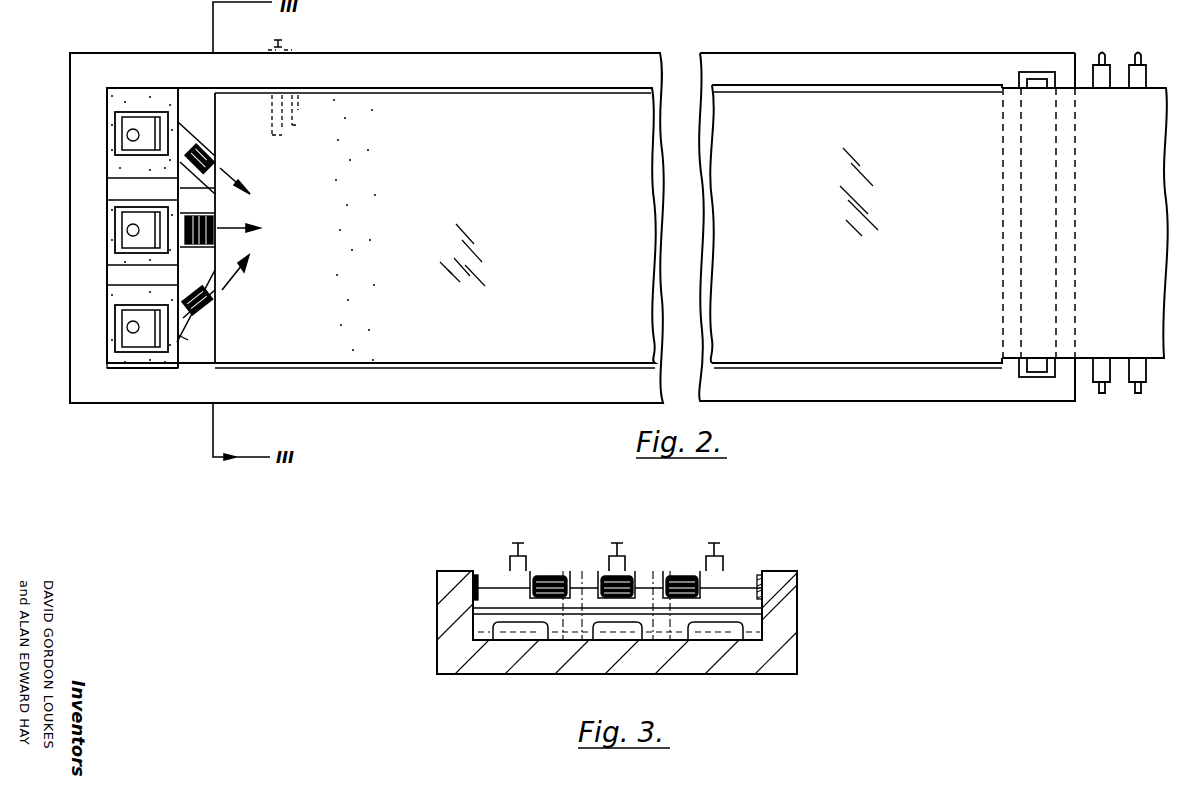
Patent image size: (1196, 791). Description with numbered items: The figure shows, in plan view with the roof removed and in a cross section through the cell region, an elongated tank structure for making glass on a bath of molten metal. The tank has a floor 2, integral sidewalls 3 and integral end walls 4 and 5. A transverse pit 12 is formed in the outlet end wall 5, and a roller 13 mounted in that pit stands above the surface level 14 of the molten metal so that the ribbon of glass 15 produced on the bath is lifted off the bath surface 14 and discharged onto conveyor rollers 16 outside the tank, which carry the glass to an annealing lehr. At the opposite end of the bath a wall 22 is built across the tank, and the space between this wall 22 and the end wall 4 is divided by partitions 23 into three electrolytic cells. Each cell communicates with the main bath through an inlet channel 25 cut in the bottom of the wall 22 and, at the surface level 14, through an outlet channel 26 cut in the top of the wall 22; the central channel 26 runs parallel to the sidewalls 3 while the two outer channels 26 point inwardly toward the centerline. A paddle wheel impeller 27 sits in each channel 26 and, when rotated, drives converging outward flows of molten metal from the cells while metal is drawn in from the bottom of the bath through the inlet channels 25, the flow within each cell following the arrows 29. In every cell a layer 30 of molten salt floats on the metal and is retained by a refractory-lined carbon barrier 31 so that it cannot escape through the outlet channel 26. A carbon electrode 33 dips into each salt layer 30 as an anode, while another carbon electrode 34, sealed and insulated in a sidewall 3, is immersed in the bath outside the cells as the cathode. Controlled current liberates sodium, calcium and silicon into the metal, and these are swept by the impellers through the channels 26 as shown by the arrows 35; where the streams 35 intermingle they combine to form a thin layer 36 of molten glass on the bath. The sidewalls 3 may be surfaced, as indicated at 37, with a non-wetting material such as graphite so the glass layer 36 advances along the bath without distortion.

In FIG. 3, the floor 2 is at (617, 660).
In FIG. 2, the sidewalls 3 is at (321, 227).
In FIG. 3, the sidewalls 3 is at (617, 622).
In FIG. 2, the end wall 4 is at (123, 228).
In FIG. 2, the outlet end wall 5 is at (1043, 67).
In FIG. 2, the transverse pit 12 is at (1049, 373).
In FIG. 2, the roller 13 is at (1037, 372).
In FIG. 3, the surface level 14 is at (735, 586).
In FIG. 2, the ribbon of glass 15 is at (619, 228).
In FIG. 2, the conveyor rollers 16 is at (1143, 85).
In FIG. 2, the wall 22 is at (182, 337).
In FIG. 3, the wall 22 is at (480, 585).
In FIG. 2, the partitions 23 is at (142, 232).
In FIG. 3, the inlet channel 25 is at (518, 634).
In FIG. 2, the outlet channel 26 is at (190, 130).
In FIG. 3, the outlet channel 26 is at (545, 577).
In FIG. 2, the paddle wheel impeller 27 is at (214, 160).
In FIG. 3, the paddle wheel impeller 27 is at (562, 582).
In FIG. 2, the arrows 29 is at (162, 368).
In FIG. 2, the layer of molten salt 30 is at (115, 153).
In FIG. 2, the carbon barrier 31 is at (122, 117).
In FIG. 2, the carbon electrode 33 is at (127, 135).
In FIG. 3, the carbon electrode 33 is at (511, 560).
In FIG. 2, the carbon electrode 34 is at (300, 92).
In FIG. 2, the arrows 35 is at (240, 218).
In FIG. 2, the layer of molten glass 36 is at (409, 230).
In FIG. 2, the surfacing 37 is at (534, 88).
In FIG. 3, the surfacing 37 is at (480, 584).